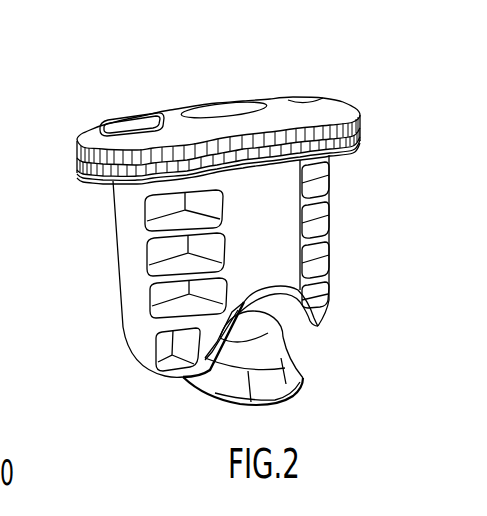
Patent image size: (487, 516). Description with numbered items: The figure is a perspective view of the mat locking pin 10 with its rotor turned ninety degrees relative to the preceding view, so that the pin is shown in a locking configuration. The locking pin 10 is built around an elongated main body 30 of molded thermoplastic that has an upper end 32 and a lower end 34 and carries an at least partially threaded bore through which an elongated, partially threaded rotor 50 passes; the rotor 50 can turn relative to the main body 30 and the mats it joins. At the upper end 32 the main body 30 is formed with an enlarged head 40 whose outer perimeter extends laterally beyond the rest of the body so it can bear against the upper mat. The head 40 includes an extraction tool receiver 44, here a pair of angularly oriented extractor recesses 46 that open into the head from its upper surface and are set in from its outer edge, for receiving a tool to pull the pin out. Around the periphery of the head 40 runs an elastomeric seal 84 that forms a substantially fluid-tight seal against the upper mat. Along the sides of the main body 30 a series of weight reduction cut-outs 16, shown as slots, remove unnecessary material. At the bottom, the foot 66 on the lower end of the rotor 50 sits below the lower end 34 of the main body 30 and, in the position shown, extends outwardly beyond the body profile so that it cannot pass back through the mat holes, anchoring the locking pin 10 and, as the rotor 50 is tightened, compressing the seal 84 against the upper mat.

The mat locking pin 10 is at (78, 255).
The weight reduction cut-outs 16 is at (323, 210).
The main body 30 is at (112, 316).
The upper end 32 is at (380, 110).
The lower end 34 is at (352, 290).
The head 40 is at (176, 100).
The extraction tool receiver 44 is at (112, 116).
The extractor recesses 46 is at (131, 113).
The rotor 50 is at (296, 342).
The foot 66 is at (302, 374).
The elastomeric seal 84 is at (75, 150).